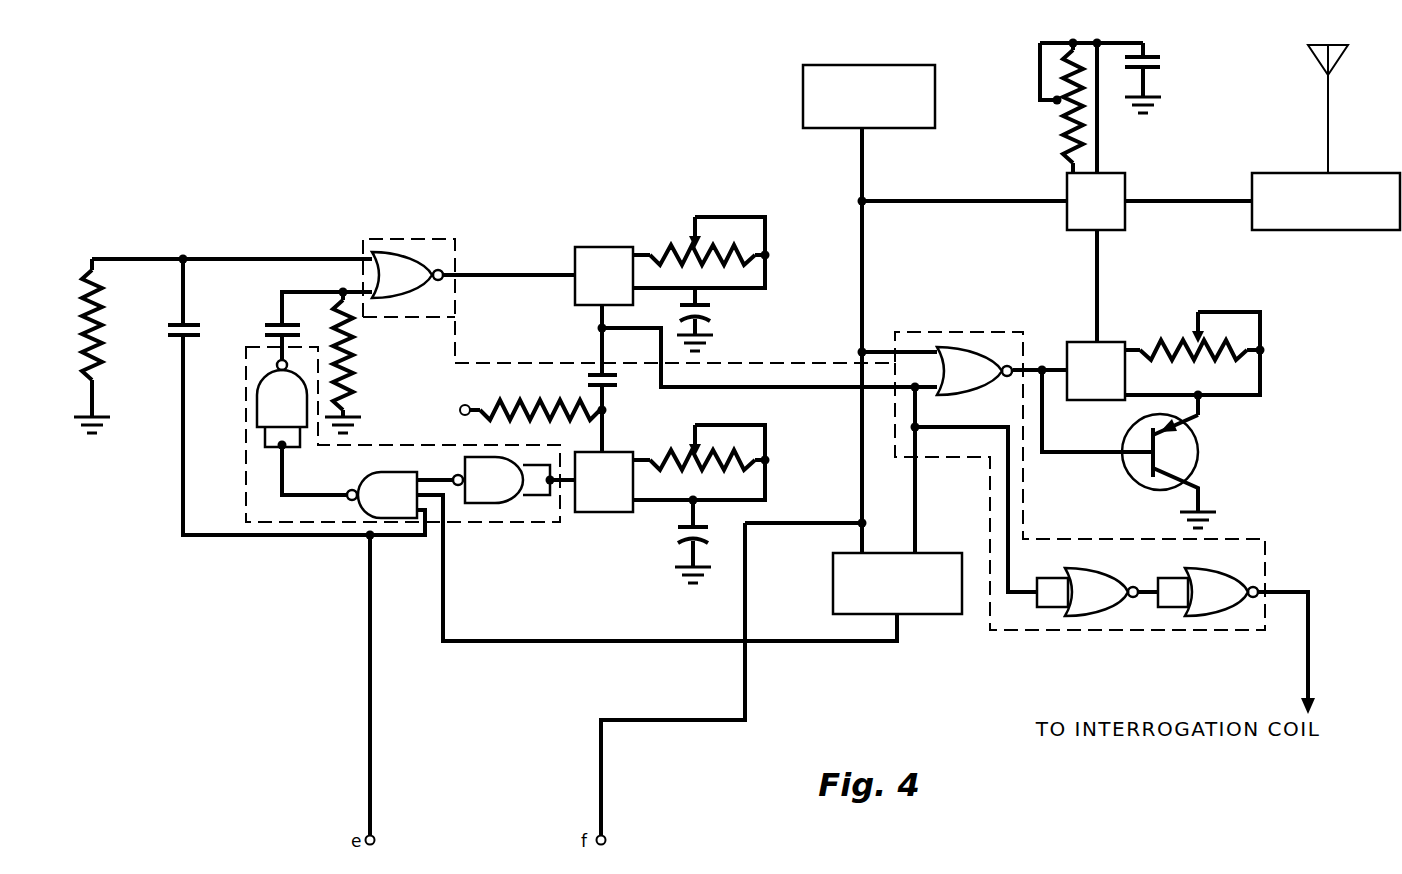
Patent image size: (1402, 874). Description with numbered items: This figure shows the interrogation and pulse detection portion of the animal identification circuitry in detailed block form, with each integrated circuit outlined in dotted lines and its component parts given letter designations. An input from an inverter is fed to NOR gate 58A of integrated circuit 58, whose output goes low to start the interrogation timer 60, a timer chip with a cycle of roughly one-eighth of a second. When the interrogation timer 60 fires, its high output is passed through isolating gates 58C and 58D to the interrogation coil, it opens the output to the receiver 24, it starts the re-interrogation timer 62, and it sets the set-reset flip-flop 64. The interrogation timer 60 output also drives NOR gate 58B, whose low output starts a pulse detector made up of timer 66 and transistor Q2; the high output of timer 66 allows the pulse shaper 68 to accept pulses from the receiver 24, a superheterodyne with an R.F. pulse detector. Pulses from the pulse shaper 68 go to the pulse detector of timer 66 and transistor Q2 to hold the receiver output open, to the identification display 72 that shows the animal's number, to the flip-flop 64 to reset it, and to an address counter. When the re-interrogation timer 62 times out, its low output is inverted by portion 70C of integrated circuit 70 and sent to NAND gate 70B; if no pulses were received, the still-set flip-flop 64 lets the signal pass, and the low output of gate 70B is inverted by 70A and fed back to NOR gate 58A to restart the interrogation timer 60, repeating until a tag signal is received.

The receiver 24 is at (1375, 186).
The integrated circuit 58 is at (455, 256).
The NOR gate 58A is at (408, 265).
The NOR gate 58B is at (960, 357).
The isolating gate 58C is at (1092, 605).
The isolating gate 58D is at (1218, 600).
The interrogation timer 60 is at (612, 260).
The re-interrogation timer 62 is at (605, 495).
The set-reset flip-flop 64 is at (833, 580).
The timer 66 is at (1112, 352).
The pulse shaper 68 is at (1108, 184).
The integrated circuit 70 is at (413, 445).
The inverter 70A is at (260, 403).
The NAND gate 70B is at (378, 485).
The inverter 70C is at (503, 495).
The identification display 72 is at (912, 75).
The transistor Q2 is at (1180, 447).